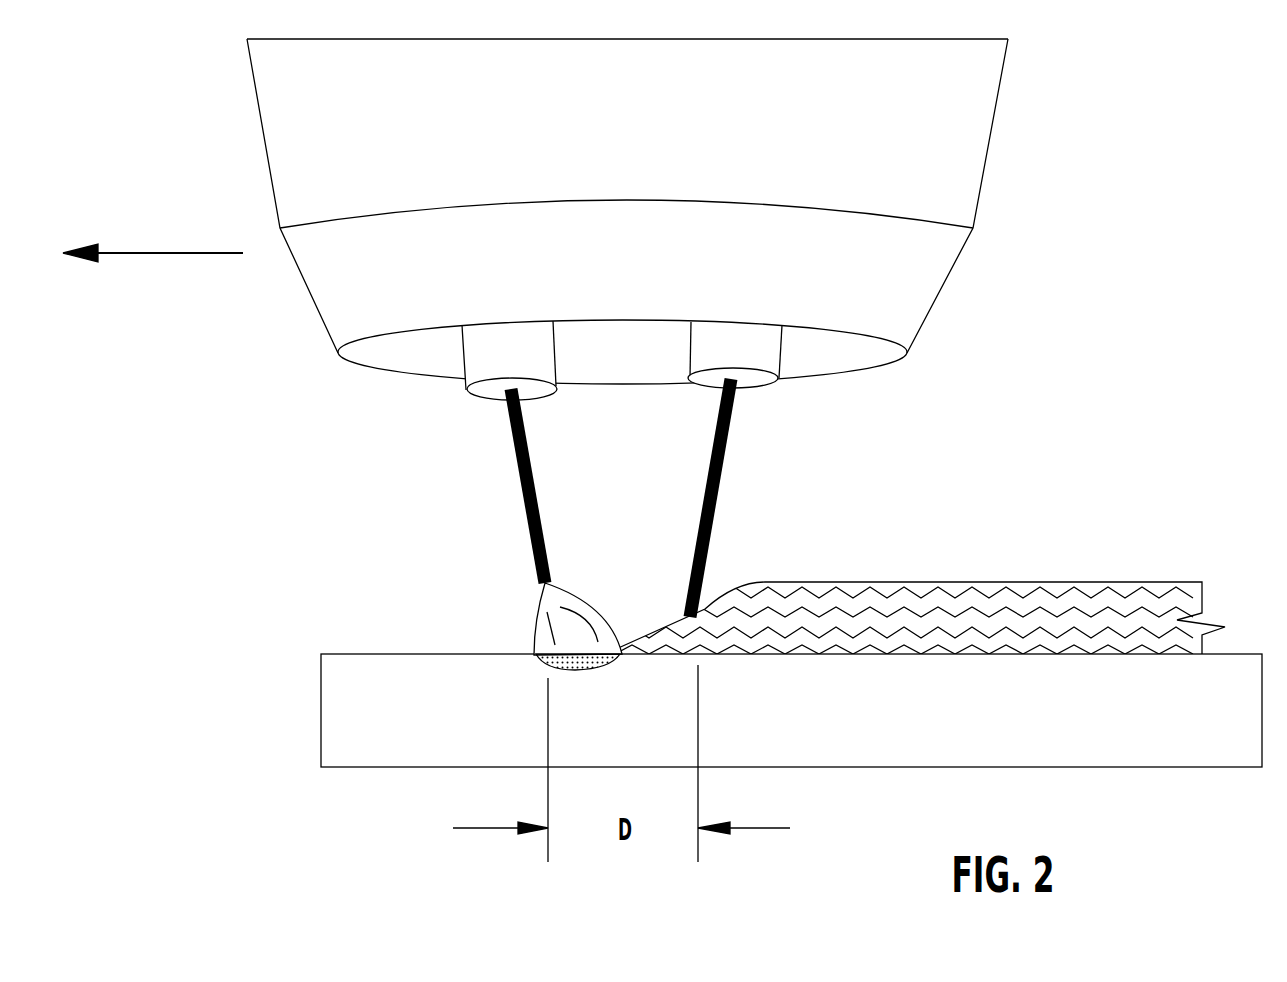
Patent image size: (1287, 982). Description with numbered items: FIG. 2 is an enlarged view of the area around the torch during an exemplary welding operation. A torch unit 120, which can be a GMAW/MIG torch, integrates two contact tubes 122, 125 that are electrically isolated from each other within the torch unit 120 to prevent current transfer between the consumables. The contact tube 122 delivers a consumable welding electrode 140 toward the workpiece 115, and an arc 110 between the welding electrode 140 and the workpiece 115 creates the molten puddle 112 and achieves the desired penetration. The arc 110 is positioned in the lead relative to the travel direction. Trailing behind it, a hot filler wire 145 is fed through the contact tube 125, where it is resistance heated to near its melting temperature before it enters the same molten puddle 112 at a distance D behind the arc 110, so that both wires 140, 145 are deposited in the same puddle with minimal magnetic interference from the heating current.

The arc 110 is at (534, 627).
The molten puddle 112 is at (538, 657).
The workpiece 115 is at (1117, 747).
The torch unit 120 is at (627, 211).
The contact tube 122 is at (465, 397).
The contact tube 125 is at (772, 385).
The welding electrode 140 is at (513, 462).
The filler wire 145 is at (720, 465).